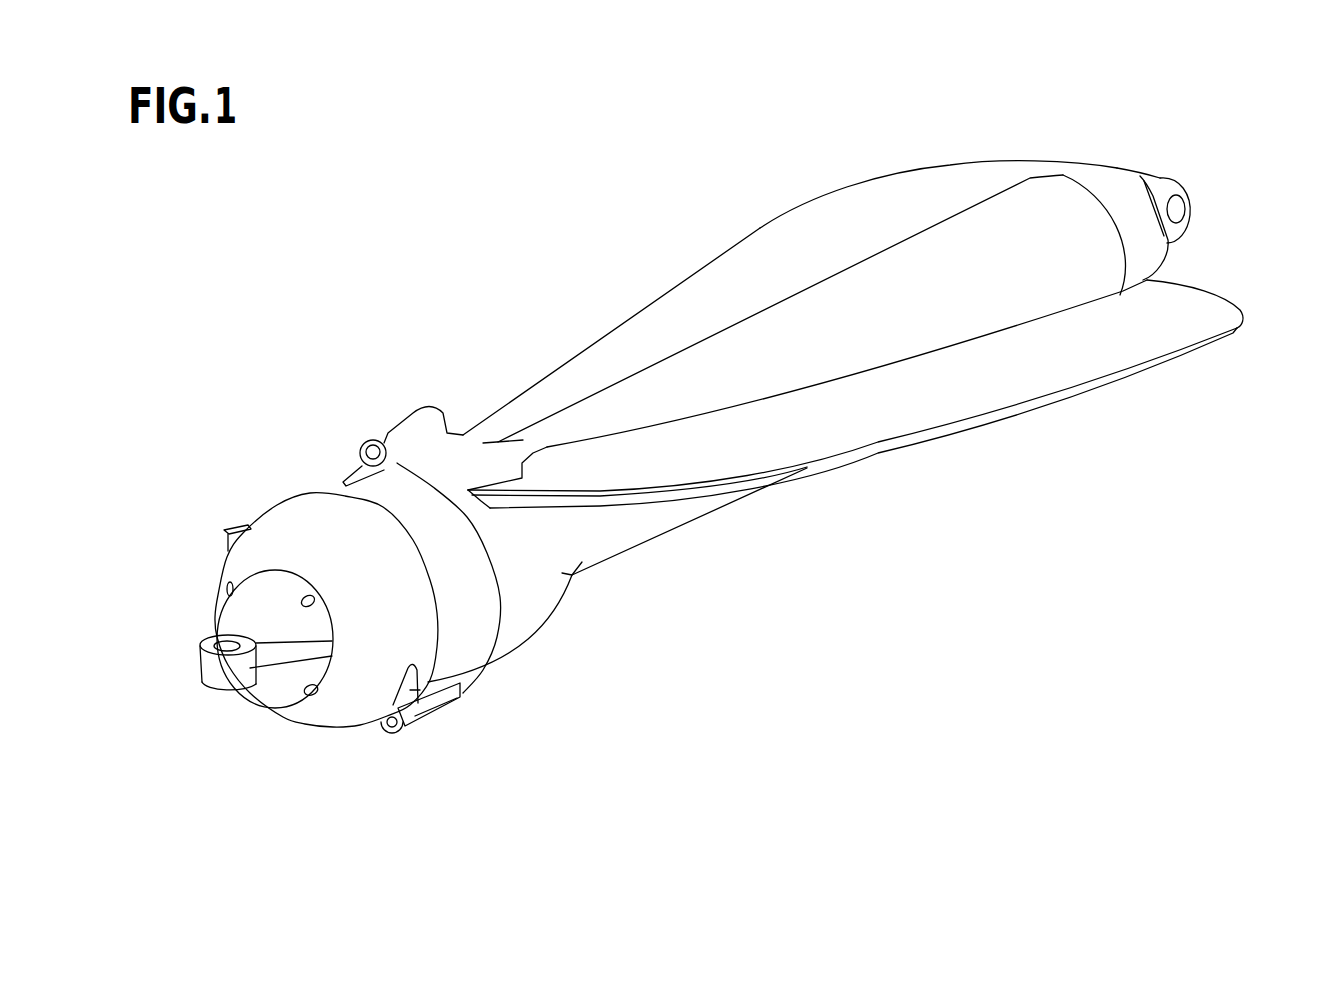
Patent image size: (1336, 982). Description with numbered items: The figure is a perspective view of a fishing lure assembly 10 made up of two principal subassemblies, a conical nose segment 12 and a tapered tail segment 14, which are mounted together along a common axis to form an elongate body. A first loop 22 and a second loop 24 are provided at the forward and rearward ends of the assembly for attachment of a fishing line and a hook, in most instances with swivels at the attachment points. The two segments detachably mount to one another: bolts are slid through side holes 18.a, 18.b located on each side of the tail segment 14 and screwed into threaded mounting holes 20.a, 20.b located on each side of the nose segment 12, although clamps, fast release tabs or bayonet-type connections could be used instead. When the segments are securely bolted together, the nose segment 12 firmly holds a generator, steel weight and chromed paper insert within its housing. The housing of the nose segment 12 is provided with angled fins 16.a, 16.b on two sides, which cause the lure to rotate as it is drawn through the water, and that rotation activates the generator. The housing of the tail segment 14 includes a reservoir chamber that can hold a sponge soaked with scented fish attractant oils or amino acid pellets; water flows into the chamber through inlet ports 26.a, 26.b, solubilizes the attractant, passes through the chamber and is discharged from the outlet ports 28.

The lure assembly 10 is at (490, 243).
The nose segment 12 is at (714, 358).
The tail segment 14 is at (405, 595).
The angled fin 16.a is at (838, 192).
The angled fin 16.b is at (1084, 395).
The side hole 18.a is at (365, 441).
The side hole 18.b is at (400, 736).
The threaded mounting hole 20.a is at (424, 409).
The threaded mounting hole 20.b is at (440, 721).
The first loop 22 is at (1162, 177).
The second loop 24 is at (207, 677).
The inlet port 26.a is at (223, 531).
The inlet port 26.b is at (460, 675).
The outlet ports 28 is at (311, 698).